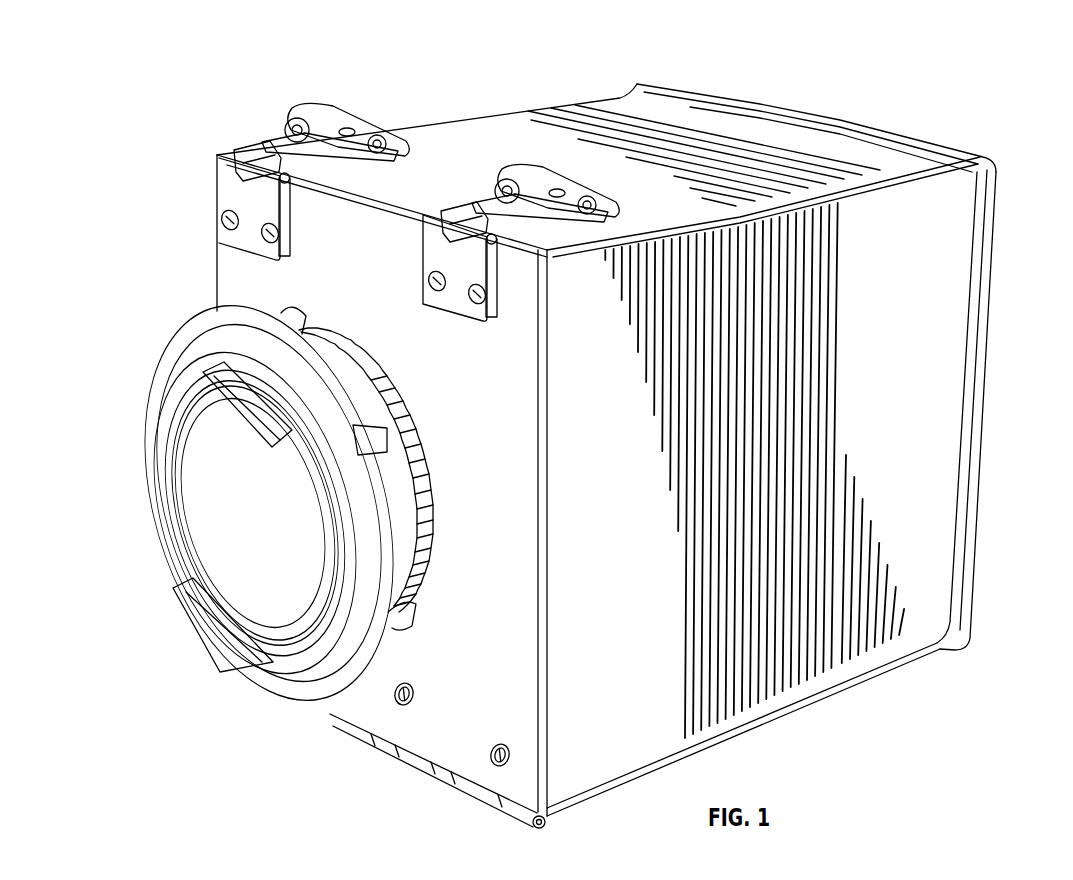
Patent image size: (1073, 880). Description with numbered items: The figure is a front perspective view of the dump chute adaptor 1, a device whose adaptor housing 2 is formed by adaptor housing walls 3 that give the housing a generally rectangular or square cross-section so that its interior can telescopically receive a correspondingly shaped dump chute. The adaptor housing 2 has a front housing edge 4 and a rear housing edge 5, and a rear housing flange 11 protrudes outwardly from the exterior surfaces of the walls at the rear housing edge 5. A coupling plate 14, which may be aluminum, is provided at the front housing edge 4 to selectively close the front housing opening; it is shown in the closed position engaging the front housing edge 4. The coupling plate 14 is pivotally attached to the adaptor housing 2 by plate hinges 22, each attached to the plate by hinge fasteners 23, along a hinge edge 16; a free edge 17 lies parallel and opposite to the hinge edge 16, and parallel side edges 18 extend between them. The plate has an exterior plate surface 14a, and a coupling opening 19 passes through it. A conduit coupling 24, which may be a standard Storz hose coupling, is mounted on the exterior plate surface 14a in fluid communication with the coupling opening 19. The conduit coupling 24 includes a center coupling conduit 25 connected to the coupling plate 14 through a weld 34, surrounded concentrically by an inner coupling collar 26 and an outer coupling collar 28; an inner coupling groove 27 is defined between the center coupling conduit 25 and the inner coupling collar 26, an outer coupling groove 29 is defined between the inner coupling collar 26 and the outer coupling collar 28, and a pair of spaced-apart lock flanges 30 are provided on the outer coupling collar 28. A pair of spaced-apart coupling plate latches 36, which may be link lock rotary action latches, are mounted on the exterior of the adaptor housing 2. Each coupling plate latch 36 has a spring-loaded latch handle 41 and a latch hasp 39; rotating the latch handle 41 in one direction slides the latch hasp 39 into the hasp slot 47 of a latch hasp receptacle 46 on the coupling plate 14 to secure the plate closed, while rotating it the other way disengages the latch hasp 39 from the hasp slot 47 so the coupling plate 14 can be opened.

The dump chute adaptor 1 is at (460, 52).
The adaptor housing 2 is at (881, 672).
The adaptor housing wall 3 is at (625, 100).
The front housing edge 4 is at (540, 628).
The rear housing edge 5 is at (985, 240).
The rear housing flange 11 is at (992, 181).
The coupling plate 14 is at (357, 485).
The exterior plate surface 14a is at (515, 586).
The hinge edge 16 is at (456, 796).
The free edge 17 is at (349, 201).
The side edges 18 is at (545, 518).
The coupling opening 19 is at (208, 468).
The plate hinge 22 is at (410, 766).
The hinge fastener 23 is at (506, 742).
The conduit coupling 24 is at (146, 342).
The center coupling conduit 25 is at (405, 506).
The inner coupling collar 26 is at (305, 500).
The inner coupling groove 27 is at (318, 607).
The outer coupling collar 28 is at (200, 315).
The outer coupling groove 29 is at (185, 365).
The lock flanges 30 is at (250, 410).
The weld 34 is at (405, 400).
The coupling plate latch 36 is at (315, 78).
The latch hasp 39 is at (235, 184).
The latch handle 41 is at (288, 105).
The latch hasp receptacle 46 is at (425, 243).
The hasp slot 47 is at (245, 155).